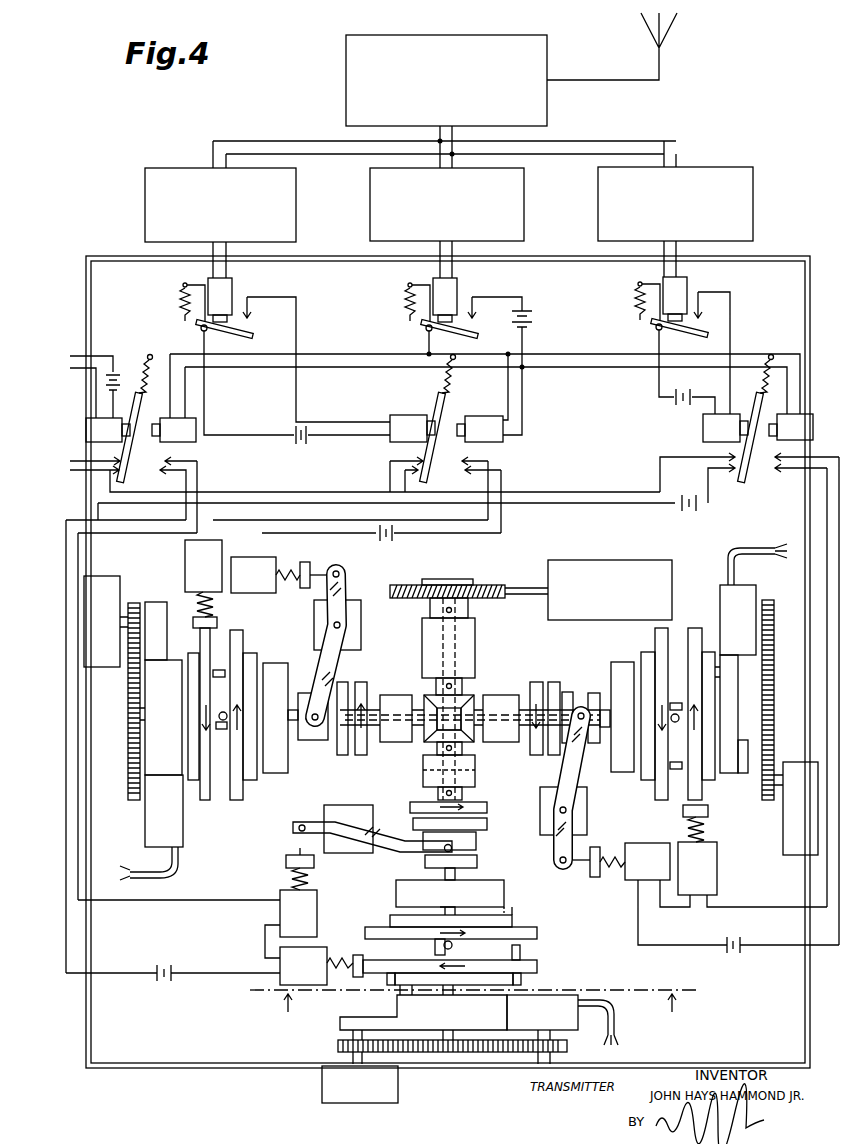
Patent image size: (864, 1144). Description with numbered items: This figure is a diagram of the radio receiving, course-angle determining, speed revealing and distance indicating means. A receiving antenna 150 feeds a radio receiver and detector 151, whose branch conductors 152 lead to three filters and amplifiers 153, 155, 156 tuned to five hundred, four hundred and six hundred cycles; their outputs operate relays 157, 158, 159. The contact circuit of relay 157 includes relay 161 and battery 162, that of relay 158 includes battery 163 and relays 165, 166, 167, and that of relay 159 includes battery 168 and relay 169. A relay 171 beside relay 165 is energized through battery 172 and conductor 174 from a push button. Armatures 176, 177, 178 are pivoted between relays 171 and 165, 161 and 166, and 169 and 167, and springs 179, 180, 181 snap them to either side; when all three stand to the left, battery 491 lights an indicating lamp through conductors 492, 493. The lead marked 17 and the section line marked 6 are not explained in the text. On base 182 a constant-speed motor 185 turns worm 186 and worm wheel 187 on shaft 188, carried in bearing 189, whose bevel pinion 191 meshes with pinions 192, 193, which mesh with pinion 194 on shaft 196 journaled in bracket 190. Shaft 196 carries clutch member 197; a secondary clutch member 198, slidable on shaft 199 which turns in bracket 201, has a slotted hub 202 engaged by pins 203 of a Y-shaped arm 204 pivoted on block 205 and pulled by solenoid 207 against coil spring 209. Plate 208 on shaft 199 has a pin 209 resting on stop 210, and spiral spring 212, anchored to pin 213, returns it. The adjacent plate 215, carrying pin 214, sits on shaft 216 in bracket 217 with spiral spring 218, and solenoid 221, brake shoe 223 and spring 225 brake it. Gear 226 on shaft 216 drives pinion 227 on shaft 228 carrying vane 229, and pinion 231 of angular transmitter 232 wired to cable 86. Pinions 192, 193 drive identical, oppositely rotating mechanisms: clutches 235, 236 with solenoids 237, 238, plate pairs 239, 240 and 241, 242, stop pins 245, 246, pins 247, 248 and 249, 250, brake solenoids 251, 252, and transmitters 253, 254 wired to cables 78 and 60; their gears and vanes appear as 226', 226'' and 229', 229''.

The receiving antenna 150 is at (673, 33).
The radio receiver and detector 151 is at (346, 89).
The branch conductors 152 is at (452, 127).
The filter and amplifier 153 is at (145, 206).
The filter and amplifier 155 is at (370, 200).
The filter and amplifier 156 is at (598, 206).
The relay 157 is at (234, 290).
The relay 158 is at (459, 290).
The relay 159 is at (686, 290).
The relay 161 is at (404, 415).
The battery 162 is at (292, 431).
The battery 163 is at (534, 324).
The relay 165 is at (194, 442).
The relay 166 is at (500, 442).
The relay 167 is at (808, 422).
The battery 168 is at (686, 384).
The relay 169 is at (703, 428).
The relay 171 is at (92, 432).
The battery 172 is at (120, 372).
The conductor 174 is at (84, 382).
The conductor 17 is at (82, 342).
The armature 176 is at (124, 478).
The armature 177 is at (426, 478).
The armature 178 is at (748, 480).
The spring 179 is at (158, 378).
The spring 180 is at (458, 386).
The spring 181 is at (768, 392).
The base 182 is at (788, 262).
The motor 185 is at (607, 560).
The worm 186 is at (460, 579).
The worm wheel 187 is at (491, 600).
The shaft 188 is at (436, 630).
The bearing 189 is at (475, 664).
The bracket 190 is at (424, 785).
The beveled pinion 191 is at (462, 700).
The beveled pinion 192 is at (468, 728).
The beveled pinion 193 is at (426, 740).
The beveled pinion 194 is at (464, 740).
The shaft 196 is at (424, 773).
The clutch member 197 is at (478, 804).
The secondary clutch member 198 is at (485, 820).
The shaft 199 is at (479, 864).
The bracket 201 is at (396, 892).
The slotted hub 202 is at (481, 836).
The pins 203 is at (455, 848).
The Y-shaped arm 204 is at (385, 858).
The block 205 is at (341, 846).
The solenoid 207 is at (280, 905).
The circular plate 208 is at (536, 934).
The coil spring 209 is at (290, 876).
The stop 210 is at (452, 948).
The spiral spring 212 is at (390, 918).
The pin 213 is at (506, 914).
The pin 214 is at (520, 952).
The secondary plate 215 is at (537, 966).
The shaft 216 is at (456, 1038).
The bracket 217 is at (396, 1012).
The spiral spring 218 is at (521, 983).
The solenoid 221 is at (280, 977).
The brake member 223 is at (358, 954).
The spiral spring 225 is at (345, 976).
The gear 226 is at (452, 1061).
The rack 226' is at (118, 701).
The rack 226'' is at (787, 700).
The pinion 227 is at (338, 1049).
The shaft 228 is at (338, 1038).
The vane 229 is at (379, 1084).
The vane 229' is at (107, 607).
The vane 229'' is at (795, 823).
The pinion 231 is at (567, 1046).
The electrical angular transmitter 232 is at (588, 996).
The clutch 235 is at (545, 682).
The clutch 236 is at (355, 682).
The solenoid 237 is at (638, 842).
The solenoid 238 is at (260, 592).
The plate 239 is at (655, 648).
The plate 240 is at (695, 626).
The plate 241 is at (246, 797).
The plate 242 is at (204, 794).
The pin 245 is at (675, 723).
The pin 246 is at (224, 710).
The pin 247 is at (676, 702).
The pin 248 is at (220, 729).
The pin 249 is at (675, 770).
The pin 250 is at (218, 640).
The brake solenoid 251 is at (718, 868).
The brake solenoid 252 is at (185, 570).
The electrical angular transmitter 253 is at (754, 590).
The electrical angular transmitter 254 is at (143, 845).
The battery 491 is at (682, 509).
The conductor 492 is at (76, 458).
The conductor 493 is at (78, 474).
The four wire cable 60 is at (182, 876).
The four wire cable 78 is at (764, 548).
The cable 86 is at (616, 1012).
The section line 6 is at (475, 1011).